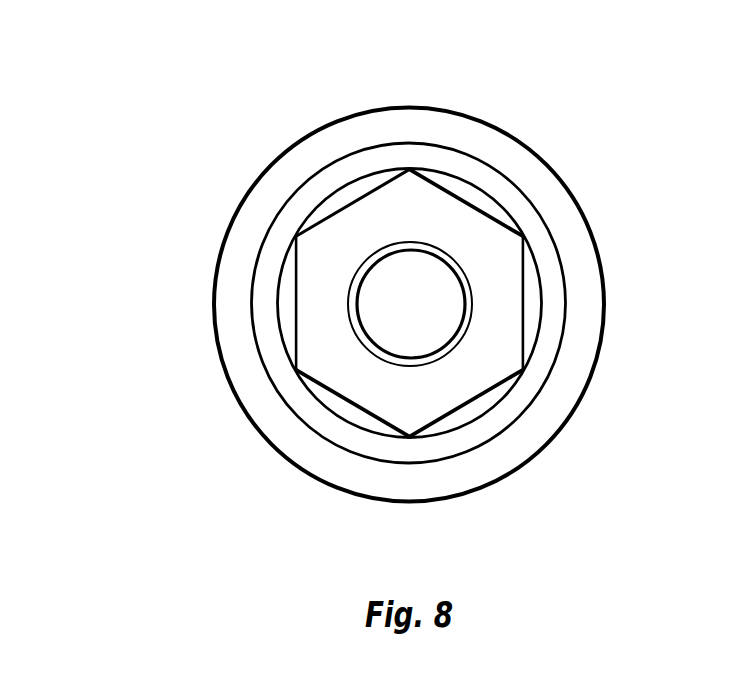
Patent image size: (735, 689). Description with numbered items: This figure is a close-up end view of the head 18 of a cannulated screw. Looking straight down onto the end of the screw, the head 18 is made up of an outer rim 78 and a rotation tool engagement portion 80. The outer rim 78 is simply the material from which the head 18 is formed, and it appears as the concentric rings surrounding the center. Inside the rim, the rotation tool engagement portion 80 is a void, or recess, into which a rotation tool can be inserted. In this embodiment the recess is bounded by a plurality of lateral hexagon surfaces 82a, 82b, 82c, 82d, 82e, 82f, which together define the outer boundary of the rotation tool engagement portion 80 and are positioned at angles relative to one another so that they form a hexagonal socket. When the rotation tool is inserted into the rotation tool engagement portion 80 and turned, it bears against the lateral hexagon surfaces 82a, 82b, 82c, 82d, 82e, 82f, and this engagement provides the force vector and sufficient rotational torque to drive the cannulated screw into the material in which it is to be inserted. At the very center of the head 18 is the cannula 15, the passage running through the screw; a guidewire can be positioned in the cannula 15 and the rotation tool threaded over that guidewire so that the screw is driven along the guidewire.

The head 18 is at (262, 151).
The outer rim 78 is at (572, 228).
The rotation tool engagement portion 80 is at (369, 208).
The lateral hexagon surface 82a is at (293, 323).
The lateral hexagon surface 82b is at (353, 405).
The lateral hexagon surface 82c is at (470, 403).
The lateral hexagon surface 82d is at (525, 288).
The lateral hexagon surface 82e is at (462, 197).
The lateral hexagon surface 82f is at (333, 215).
The cannula 15 is at (409, 270).